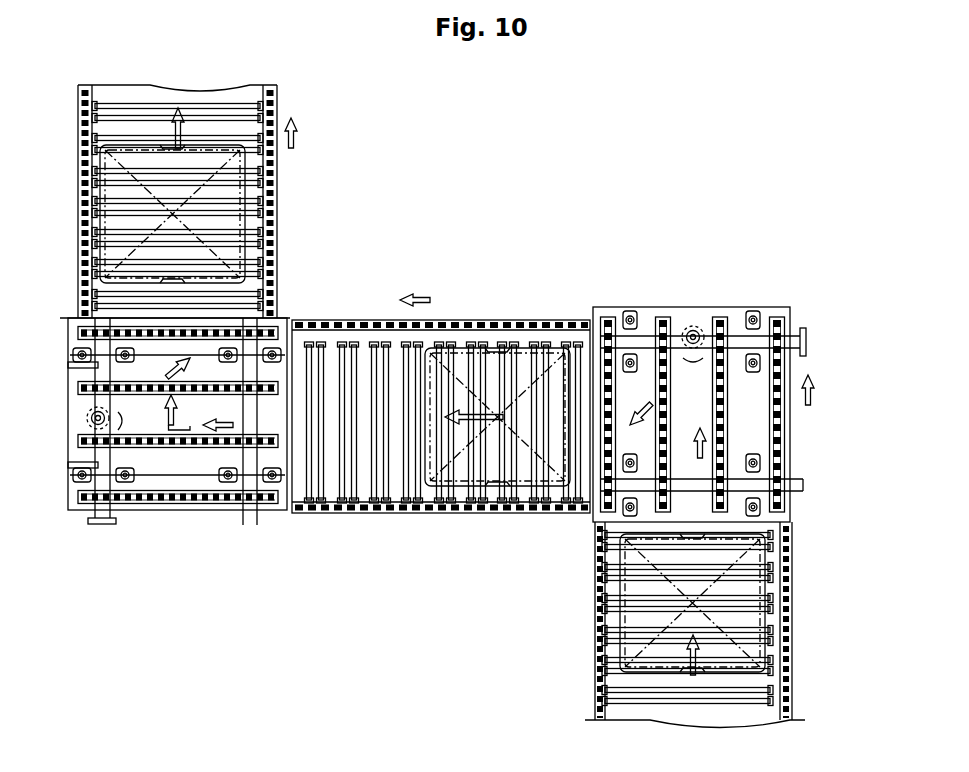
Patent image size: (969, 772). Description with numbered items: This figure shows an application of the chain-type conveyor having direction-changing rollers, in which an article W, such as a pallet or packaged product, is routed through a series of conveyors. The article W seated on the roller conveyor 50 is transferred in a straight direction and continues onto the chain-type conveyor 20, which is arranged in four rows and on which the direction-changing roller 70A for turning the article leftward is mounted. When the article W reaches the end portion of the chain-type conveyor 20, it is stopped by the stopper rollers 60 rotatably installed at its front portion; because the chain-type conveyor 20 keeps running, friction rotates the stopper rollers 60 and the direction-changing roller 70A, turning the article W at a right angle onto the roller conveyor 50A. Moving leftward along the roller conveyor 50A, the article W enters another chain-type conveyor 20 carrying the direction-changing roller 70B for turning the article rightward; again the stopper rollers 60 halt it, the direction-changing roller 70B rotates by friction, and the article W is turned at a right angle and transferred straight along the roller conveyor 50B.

The chain-type conveyor 20 is at (726, 398).
The roller conveyor 50 is at (583, 634).
The roller conveyor 50A is at (474, 304).
The roller conveyor 50B is at (283, 207).
The stopper roller 60 is at (92, 419).
The direction-changing roller 70A is at (663, 318).
The direction-changing roller 70B is at (176, 502).
The article W is at (100, 222).